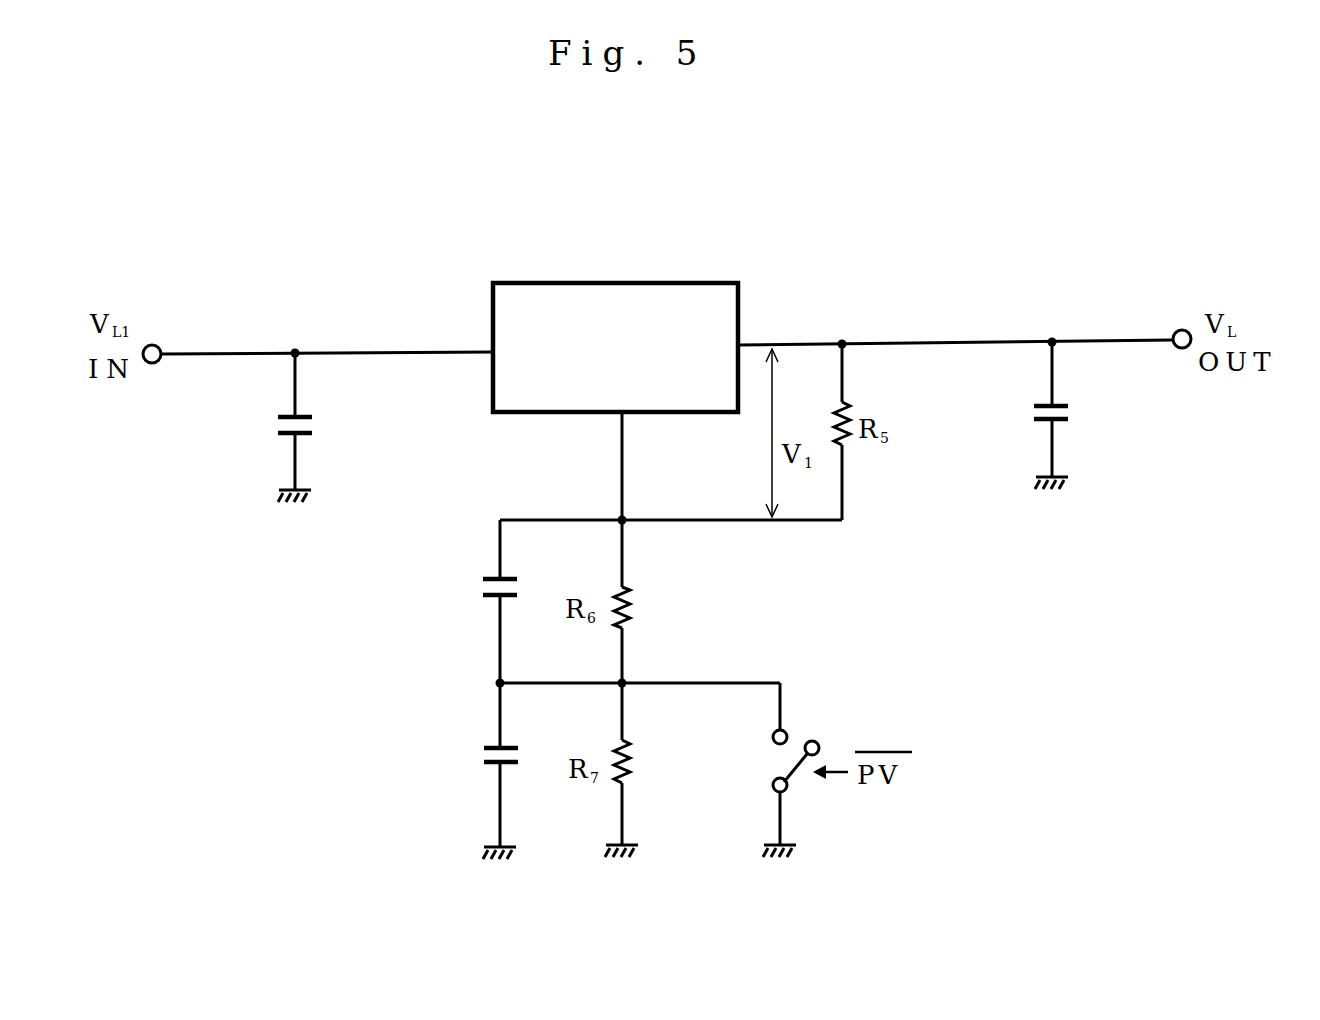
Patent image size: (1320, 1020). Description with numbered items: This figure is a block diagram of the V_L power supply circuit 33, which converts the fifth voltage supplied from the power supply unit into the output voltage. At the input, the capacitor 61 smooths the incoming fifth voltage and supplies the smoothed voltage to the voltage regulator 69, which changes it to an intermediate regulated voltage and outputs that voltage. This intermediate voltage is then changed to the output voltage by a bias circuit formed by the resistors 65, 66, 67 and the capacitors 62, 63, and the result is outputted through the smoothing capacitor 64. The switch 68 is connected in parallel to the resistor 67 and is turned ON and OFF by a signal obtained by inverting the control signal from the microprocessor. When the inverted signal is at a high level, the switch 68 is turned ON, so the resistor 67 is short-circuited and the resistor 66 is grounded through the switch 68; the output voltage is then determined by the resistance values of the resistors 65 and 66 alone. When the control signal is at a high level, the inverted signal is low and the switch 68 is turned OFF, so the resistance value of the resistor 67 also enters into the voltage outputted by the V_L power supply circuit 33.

The V_L power supply circuit 33 is at (1131, 298).
The voltage regulator 69 is at (653, 291).
The capacitor 61 is at (316, 420).
The capacitor 62 is at (480, 588).
The capacitor 63 is at (487, 750).
The smoothing capacitor 64 is at (1070, 415).
The resistor 65 is at (848, 402).
The resistor 66 is at (640, 607).
The resistor 67 is at (640, 758).
The switch 68 is at (777, 767).